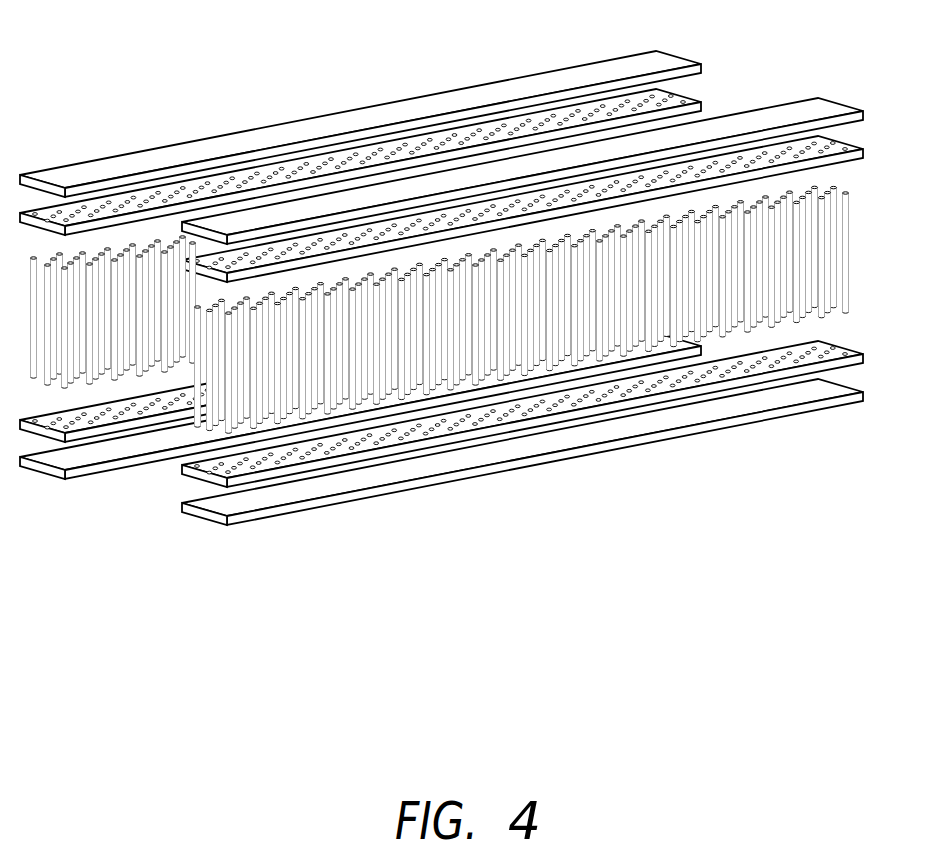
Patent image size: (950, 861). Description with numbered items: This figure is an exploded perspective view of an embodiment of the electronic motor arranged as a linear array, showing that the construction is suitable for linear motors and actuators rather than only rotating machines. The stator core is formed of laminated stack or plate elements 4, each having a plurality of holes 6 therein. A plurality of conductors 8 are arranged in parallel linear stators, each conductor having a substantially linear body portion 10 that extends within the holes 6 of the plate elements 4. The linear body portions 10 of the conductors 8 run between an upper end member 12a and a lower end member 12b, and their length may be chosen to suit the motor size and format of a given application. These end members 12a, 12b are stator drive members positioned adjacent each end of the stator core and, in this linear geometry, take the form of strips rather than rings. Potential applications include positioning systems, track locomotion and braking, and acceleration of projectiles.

The plate elements 4 is at (305, 237).
The holes 6 is at (452, 432).
The conductors 8 is at (840, 332).
The linear body portion 10 is at (467, 330).
The upper end member 12a is at (480, 163).
The lower end member 12b is at (213, 518).